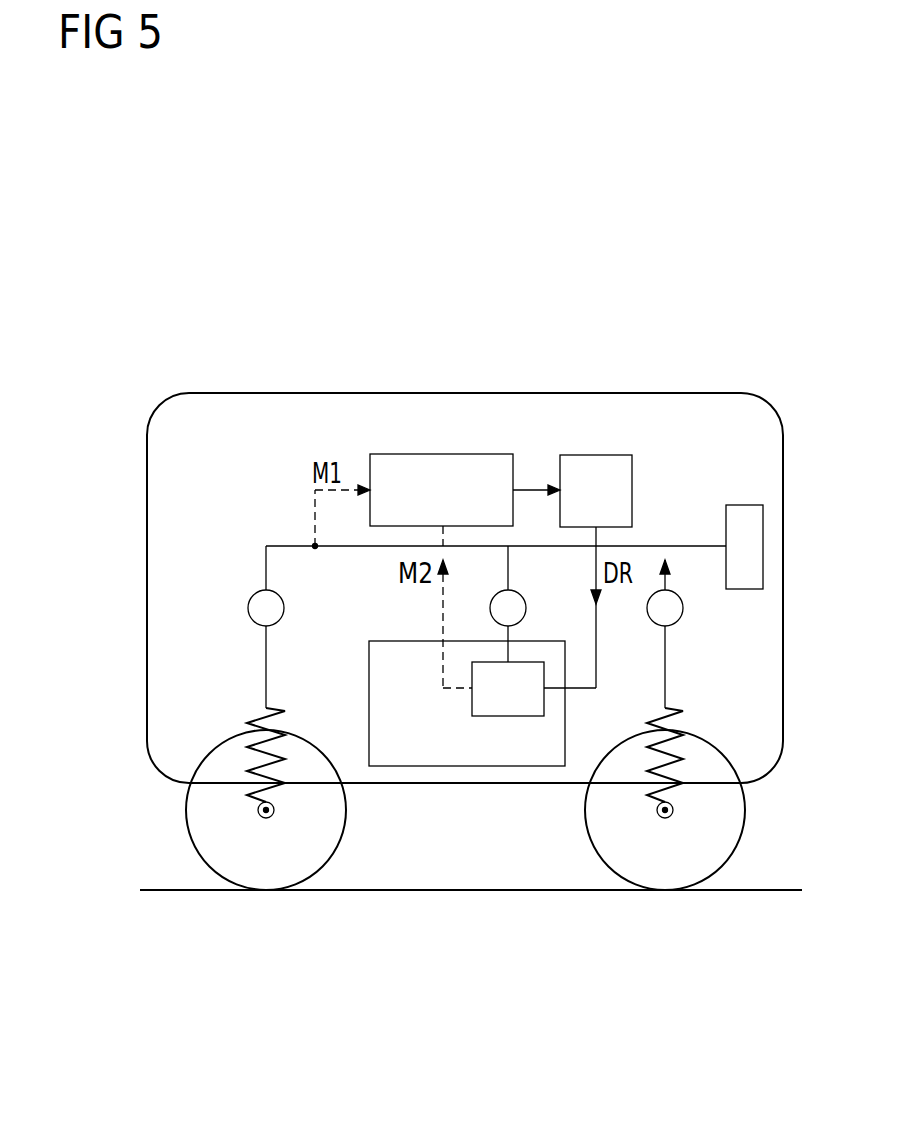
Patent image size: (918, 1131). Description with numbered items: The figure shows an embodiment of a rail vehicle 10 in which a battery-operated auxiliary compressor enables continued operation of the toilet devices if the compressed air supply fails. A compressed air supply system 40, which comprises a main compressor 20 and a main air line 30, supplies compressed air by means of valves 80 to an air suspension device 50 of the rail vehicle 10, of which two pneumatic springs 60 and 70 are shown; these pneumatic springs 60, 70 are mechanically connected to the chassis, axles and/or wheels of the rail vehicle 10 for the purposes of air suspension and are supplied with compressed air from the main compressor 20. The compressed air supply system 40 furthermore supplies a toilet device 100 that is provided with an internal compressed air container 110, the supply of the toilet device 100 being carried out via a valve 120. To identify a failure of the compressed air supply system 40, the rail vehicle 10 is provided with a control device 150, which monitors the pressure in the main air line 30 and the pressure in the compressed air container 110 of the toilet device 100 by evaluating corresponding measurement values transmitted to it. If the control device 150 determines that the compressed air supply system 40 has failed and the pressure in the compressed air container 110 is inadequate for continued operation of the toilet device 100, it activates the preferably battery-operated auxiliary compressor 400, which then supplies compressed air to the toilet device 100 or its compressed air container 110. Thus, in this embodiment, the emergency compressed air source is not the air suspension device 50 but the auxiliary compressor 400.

The rail vehicle 10 is at (451, 345).
The main compressor 20 is at (744, 520).
The main air line 30 is at (282, 545).
The compressed air supply system 40 is at (682, 534).
The air suspension device 50 is at (290, 795).
The pneumatic spring 60 is at (255, 790).
The pneumatic spring 70 is at (677, 790).
The valves 80 is at (258, 607).
The toilet device 100 is at (444, 750).
The compressed air container 110 is at (510, 700).
The valve 120 is at (513, 602).
The control device 150 is at (458, 466).
The auxiliary compressor 400 is at (588, 466).